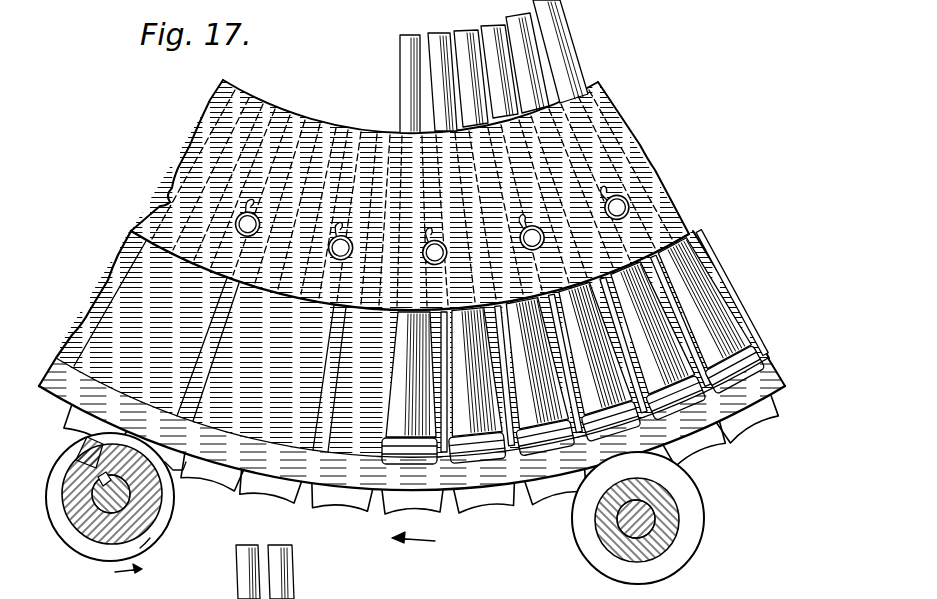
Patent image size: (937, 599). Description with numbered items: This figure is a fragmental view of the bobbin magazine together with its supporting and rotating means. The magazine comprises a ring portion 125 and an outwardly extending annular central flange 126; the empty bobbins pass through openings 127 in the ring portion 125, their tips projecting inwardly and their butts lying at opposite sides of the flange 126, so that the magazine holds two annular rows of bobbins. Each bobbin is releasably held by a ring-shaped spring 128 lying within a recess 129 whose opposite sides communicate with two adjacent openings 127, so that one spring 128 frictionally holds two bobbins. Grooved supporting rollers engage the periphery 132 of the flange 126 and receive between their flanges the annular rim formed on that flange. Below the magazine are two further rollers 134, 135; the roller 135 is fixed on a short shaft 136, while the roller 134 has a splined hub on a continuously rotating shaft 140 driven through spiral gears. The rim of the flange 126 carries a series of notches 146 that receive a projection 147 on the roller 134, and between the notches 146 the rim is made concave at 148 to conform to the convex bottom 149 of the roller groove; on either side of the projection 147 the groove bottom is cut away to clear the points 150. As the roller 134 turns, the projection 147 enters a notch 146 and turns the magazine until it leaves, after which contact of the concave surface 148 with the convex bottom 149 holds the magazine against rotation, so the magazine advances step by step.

The ring portion 125 is at (645, 148).
The annular central flange 126 is at (133, 292).
The openings 127 is at (380, 137).
The ring-shaped springs 128 is at (330, 256).
The recess 129 is at (425, 242).
The periphery of flange 132 is at (60, 392).
The roller 134 is at (160, 530).
The roller 135 is at (703, 511).
The short shaft 136 is at (647, 533).
The shaft 140 is at (93, 517).
The notches 146 is at (445, 505).
The projection 147 is at (84, 456).
The concave surface 148 is at (553, 497).
The bottom of groove 149 is at (152, 540).
The points 150 is at (173, 468).